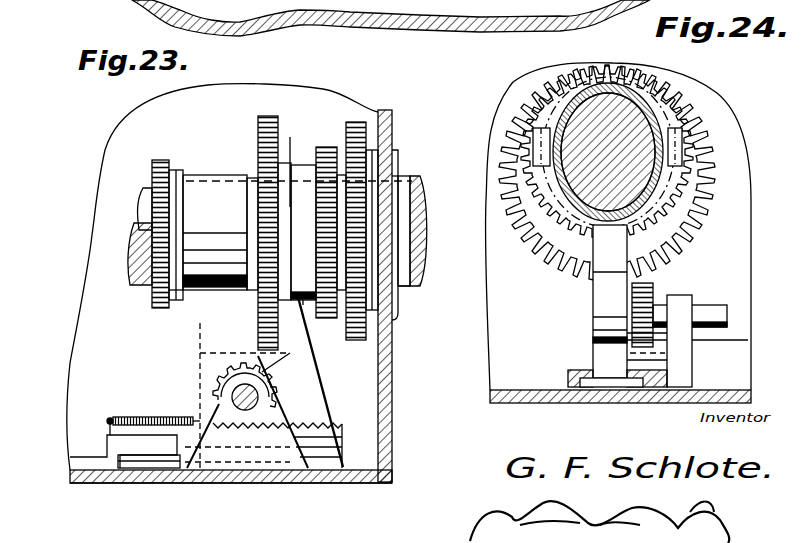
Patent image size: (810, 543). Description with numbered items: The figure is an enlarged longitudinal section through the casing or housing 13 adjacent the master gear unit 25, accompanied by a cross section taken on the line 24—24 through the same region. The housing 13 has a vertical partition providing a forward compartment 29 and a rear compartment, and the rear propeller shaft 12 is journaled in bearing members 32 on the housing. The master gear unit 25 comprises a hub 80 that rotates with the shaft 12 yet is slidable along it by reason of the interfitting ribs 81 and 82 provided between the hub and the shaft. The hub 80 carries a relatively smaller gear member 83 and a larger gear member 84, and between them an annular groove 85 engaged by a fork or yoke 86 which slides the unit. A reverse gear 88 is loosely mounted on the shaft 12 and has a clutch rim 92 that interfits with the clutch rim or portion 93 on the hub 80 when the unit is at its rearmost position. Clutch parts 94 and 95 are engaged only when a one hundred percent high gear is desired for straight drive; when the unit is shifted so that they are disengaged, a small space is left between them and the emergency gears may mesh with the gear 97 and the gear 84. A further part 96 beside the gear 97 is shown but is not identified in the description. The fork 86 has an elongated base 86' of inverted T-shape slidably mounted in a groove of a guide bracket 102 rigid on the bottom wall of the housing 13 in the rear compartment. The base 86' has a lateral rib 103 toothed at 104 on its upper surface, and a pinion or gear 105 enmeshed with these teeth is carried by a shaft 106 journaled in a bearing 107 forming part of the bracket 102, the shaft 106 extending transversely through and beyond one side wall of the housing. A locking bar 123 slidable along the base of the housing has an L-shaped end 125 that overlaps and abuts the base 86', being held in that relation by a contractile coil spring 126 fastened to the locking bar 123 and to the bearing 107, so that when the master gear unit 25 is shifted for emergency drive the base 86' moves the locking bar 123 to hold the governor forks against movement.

In FIG. 23, the rear propeller shaft 12 is at (423, 262).
In FIG. 23, the housing 13 is at (115, 140).
In FIG. 24, the housing 13 is at (492, 112).
In FIG. 23, the steering wheel 24 is at (283, 130).
In FIG. 23, the master gear unit 25 is at (258, 125).
In FIG. 24, the master gear unit 25 is at (697, 134).
In FIG. 23, the forward compartment 29 is at (499, 7).
In FIG. 23, the bearing members 32 is at (403, 176).
In FIG. 23, the hub 80 is at (255, 297).
In FIG. 24, the hub 80 is at (660, 108).
In FIG. 23, the rib 81 is at (197, 173).
In FIG. 24, the rib 81 is at (682, 165).
In FIG. 23, the rib 82 is at (432, 186).
In FIG. 24, the rib 82 is at (657, 157).
In FIG. 23, the smaller gear member 83 is at (333, 318).
In FIG. 24, the smaller gear member 83 is at (673, 207).
In FIG. 23, the larger gear member 84 is at (270, 115).
In FIG. 23, the annular groove 85 is at (297, 177).
In FIG. 24, the annular groove 85 is at (643, 95).
In FIG. 23, the fork 86 is at (307, 334).
In FIG. 24, the fork 86 is at (607, 173).
In FIG. 23, the elongated base 86' is at (326, 439).
In FIG. 24, the elongated base 86' is at (591, 301).
In FIG. 23, the reverse gear 88 is at (398, 172).
In FIG. 24, the reverse gear 88 is at (580, 257).
In FIG. 23, the clutch rim 92 is at (343, 223).
In FIG. 23, the clutch rim 93 is at (360, 160).
In FIG. 23, the clutch part 94 is at (250, 178).
In FIG. 23, the clutch part 95 is at (190, 290).
In FIG. 23, the bearing cap 96 is at (143, 188).
In FIG. 23, the gear 97 is at (161, 159).
In FIG. 23, the guide bracket 102 is at (131, 488).
In FIG. 24, the guide bracket 102 is at (668, 381).
In FIG. 23, the lateral rib 103 is at (345, 440).
In FIG. 24, the lateral rib 103 is at (692, 362).
In FIG. 23, the teeth 104 is at (340, 420).
In FIG. 24, the teeth 104 is at (692, 338).
In FIG. 23, the pinion 105 is at (214, 382).
In FIG. 24, the pinion 105 is at (647, 287).
In FIG. 23, the shaft 106 is at (232, 397).
In FIG. 24, the shaft 106 is at (715, 307).
In FIG. 23, the bearing 107 is at (265, 480).
In FIG. 24, the bearing 107 is at (678, 307).
In FIG. 23, the locking bar 123 is at (70, 465).
In FIG. 23, the L-shaped end 125 is at (104, 436).
In FIG. 23, the contractile coil spring 126 is at (133, 415).